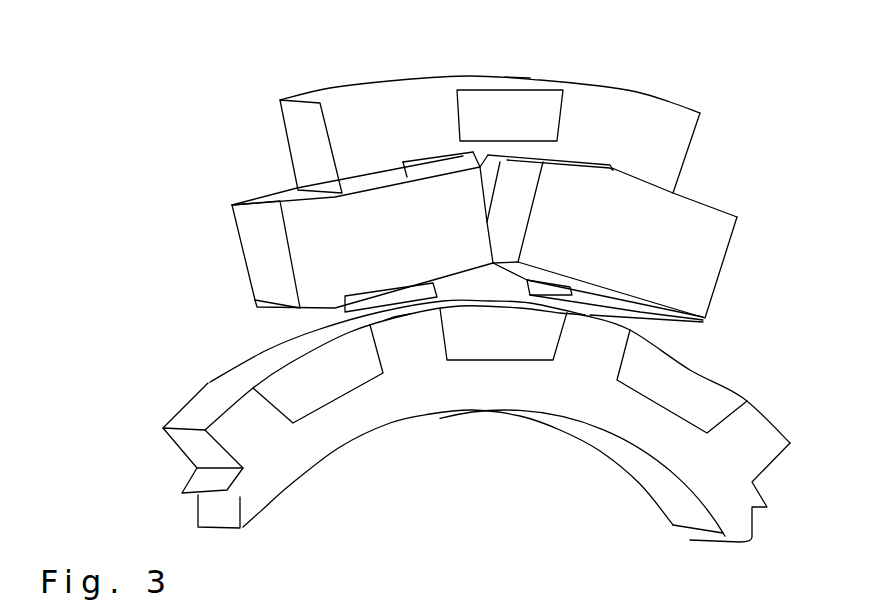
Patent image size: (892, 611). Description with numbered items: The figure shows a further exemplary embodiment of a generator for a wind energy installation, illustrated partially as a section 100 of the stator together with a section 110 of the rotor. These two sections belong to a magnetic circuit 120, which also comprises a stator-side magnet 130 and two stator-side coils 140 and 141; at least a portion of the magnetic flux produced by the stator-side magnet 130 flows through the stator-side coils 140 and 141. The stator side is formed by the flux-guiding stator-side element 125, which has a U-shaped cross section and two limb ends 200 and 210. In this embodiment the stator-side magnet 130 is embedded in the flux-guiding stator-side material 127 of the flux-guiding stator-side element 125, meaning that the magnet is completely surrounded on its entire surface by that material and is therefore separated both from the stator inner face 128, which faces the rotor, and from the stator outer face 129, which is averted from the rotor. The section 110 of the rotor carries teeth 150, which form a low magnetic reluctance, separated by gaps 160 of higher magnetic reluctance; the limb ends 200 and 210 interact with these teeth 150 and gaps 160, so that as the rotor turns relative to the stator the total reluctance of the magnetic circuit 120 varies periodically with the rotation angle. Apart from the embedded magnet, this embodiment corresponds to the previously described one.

The section of a stator 100 is at (667, 131).
The section of a rotor 110 is at (663, 450).
The magnetic circuit 120 is at (665, 180).
The flux-guiding stator-side element 125 is at (343, 135).
The flux-guiding stator-side material 127 is at (360, 120).
The stator inner face 128 is at (475, 160).
The stator outer face 129 is at (515, 76).
The stator-side magnet 130 is at (550, 98).
The stator-side coil 140 is at (305, 240).
The stator-side coil 141 is at (697, 248).
The teeth 150 is at (233, 428).
The gaps 160 is at (295, 373).
The limb end 200 is at (408, 285).
The limb end 210 is at (627, 303).